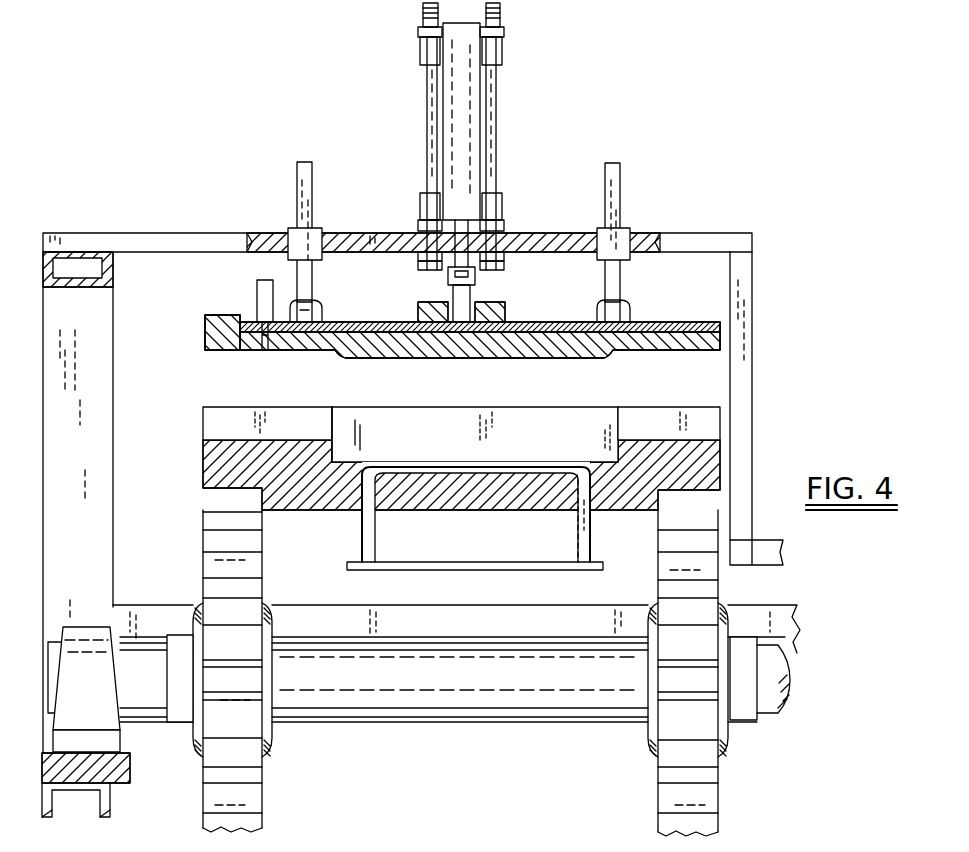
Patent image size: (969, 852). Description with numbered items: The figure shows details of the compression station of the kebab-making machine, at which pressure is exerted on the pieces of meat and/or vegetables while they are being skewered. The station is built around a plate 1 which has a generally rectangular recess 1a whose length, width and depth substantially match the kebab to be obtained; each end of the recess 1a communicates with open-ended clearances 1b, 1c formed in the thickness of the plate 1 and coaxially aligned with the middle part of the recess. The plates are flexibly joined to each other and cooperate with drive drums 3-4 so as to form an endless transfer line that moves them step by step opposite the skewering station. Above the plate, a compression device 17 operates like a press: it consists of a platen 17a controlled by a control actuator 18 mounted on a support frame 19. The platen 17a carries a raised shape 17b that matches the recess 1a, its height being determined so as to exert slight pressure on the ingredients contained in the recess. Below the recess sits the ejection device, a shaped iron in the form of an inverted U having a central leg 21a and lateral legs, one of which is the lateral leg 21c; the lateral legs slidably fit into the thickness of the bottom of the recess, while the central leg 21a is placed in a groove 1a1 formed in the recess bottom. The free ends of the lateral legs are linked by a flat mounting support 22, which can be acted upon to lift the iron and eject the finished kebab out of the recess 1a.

The plate 1 is at (502, 476).
The recess 1a is at (477, 416).
The groove 1a1 is at (375, 430).
The open-ended clearance 1b is at (693, 417).
The open-ended clearance 1c is at (227, 417).
The drive drums 3-4 is at (205, 567).
The compression device 17 is at (495, 348).
The platen 17a is at (713, 338).
The raised shape 17b is at (397, 357).
The control actuator 18 is at (495, 115).
The support frame 19 is at (133, 232).
The central leg 21a is at (450, 463).
The lateral leg 21c is at (577, 548).
The flat mounting support 22 is at (455, 570).